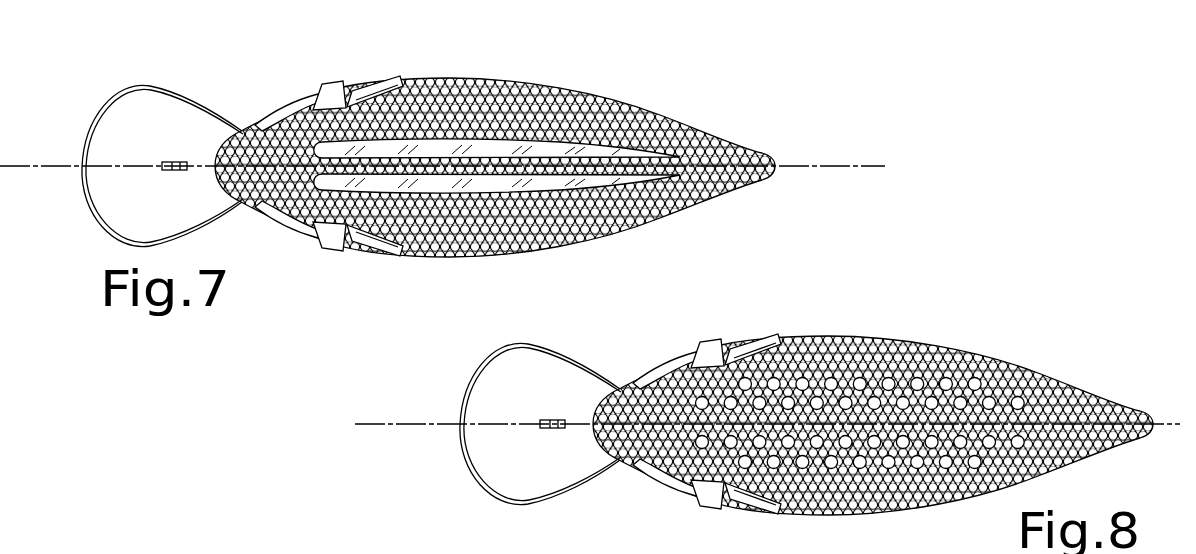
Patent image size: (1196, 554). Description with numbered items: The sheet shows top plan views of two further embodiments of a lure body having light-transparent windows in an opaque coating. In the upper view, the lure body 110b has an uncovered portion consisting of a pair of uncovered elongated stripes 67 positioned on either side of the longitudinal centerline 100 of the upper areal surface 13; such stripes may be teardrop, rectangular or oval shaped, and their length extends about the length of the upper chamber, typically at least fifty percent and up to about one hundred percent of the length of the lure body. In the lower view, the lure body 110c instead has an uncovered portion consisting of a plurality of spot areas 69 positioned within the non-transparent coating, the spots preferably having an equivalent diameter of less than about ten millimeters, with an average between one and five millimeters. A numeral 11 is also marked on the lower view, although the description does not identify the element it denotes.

In FIG. 7, the lure body 110b is at (428, 142).
In FIG. 8, the lure body 110c is at (806, 406).
In FIG. 7, the upper areal surface 13 is at (540, 125).
In FIG. 8, the lure body 11 is at (865, 444).
In FIG. 7, the longitudinal centerline 100 is at (828, 167).
In FIG. 8, the longitudinal centerline 100 is at (737, 386).
In FIG. 7, the uncovered elongated stripes 67 is at (615, 170).
In FIG. 8, the spot areas 69 is at (860, 390).